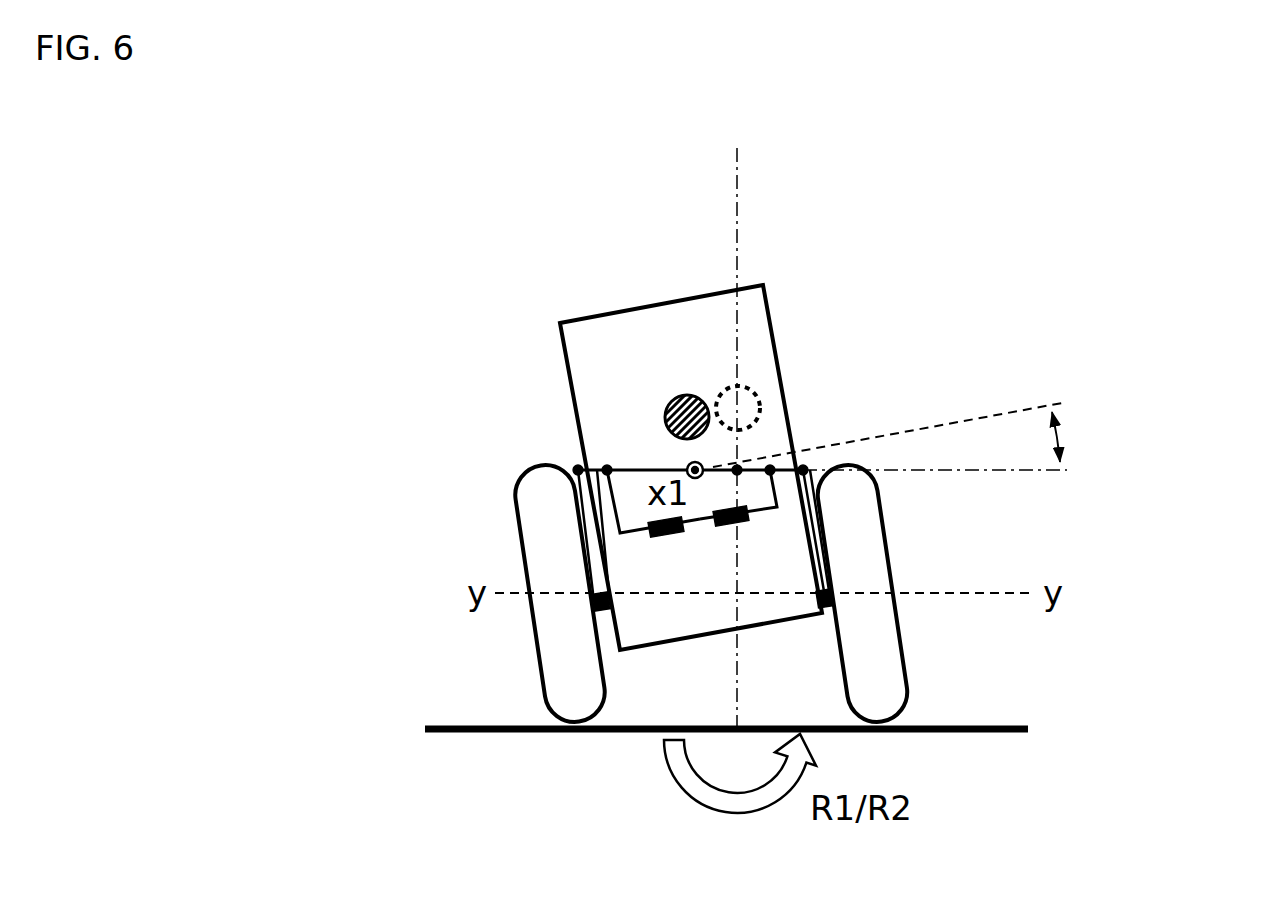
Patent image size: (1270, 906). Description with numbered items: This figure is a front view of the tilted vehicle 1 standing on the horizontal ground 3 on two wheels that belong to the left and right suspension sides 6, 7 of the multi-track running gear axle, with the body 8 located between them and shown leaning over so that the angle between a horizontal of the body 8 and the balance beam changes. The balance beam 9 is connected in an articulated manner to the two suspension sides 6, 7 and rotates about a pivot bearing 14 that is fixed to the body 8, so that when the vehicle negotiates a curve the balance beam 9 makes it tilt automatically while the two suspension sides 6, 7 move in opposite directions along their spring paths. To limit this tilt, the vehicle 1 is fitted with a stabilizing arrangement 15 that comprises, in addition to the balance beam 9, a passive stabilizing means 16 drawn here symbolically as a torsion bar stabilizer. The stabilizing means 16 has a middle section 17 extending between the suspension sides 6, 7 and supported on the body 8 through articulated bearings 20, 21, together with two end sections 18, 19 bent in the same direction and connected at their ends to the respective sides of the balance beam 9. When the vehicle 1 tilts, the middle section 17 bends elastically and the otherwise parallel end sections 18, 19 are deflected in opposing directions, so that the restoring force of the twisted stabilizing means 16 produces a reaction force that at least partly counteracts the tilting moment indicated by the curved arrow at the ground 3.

The vehicle 1 is at (1100, 310).
The ground 3 is at (483, 789).
The suspension side 6 is at (395, 543).
The suspension side 7 is at (1118, 562).
The body 8 is at (644, 307).
The balance beam 9 is at (647, 467).
The pivot bearing 14 is at (704, 522).
The stabilizing arrangement 15 is at (813, 408).
The stabilizing means 16 is at (827, 572).
The middle section 17 is at (692, 542).
The end section 18 is at (608, 493).
The end section 19 is at (782, 488).
The bearing 20 is at (587, 577).
The bearing 21 is at (733, 525).